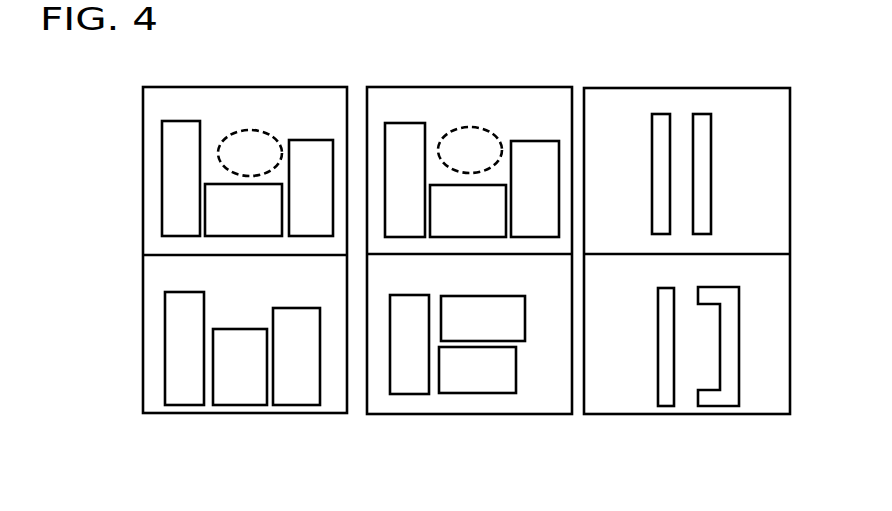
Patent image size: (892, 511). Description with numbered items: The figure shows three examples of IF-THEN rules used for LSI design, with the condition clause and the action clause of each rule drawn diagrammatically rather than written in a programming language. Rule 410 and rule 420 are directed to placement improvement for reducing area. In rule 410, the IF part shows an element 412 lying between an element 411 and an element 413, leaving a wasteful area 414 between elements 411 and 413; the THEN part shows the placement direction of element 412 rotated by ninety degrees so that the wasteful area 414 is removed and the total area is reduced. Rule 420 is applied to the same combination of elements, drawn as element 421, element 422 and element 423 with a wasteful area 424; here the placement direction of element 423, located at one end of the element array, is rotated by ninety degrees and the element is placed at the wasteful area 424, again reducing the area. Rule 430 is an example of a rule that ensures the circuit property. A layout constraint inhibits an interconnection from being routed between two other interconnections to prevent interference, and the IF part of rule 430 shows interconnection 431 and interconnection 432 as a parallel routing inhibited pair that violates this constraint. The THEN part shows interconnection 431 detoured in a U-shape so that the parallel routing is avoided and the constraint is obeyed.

The rule 410 is at (178, 413).
The element 411 is at (190, 121).
The element 412 is at (213, 184).
The element 413 is at (322, 140).
The wasteful area 414 is at (245, 130).
The rule 420 is at (458, 414).
The element 421 is at (413, 123).
The element 422 is at (437, 185).
The element 423 is at (548, 141).
The wasteful area 424 is at (483, 127).
The rule 430 is at (688, 414).
The interconnection 431 is at (703, 114).
The interconnection 432 is at (662, 114).